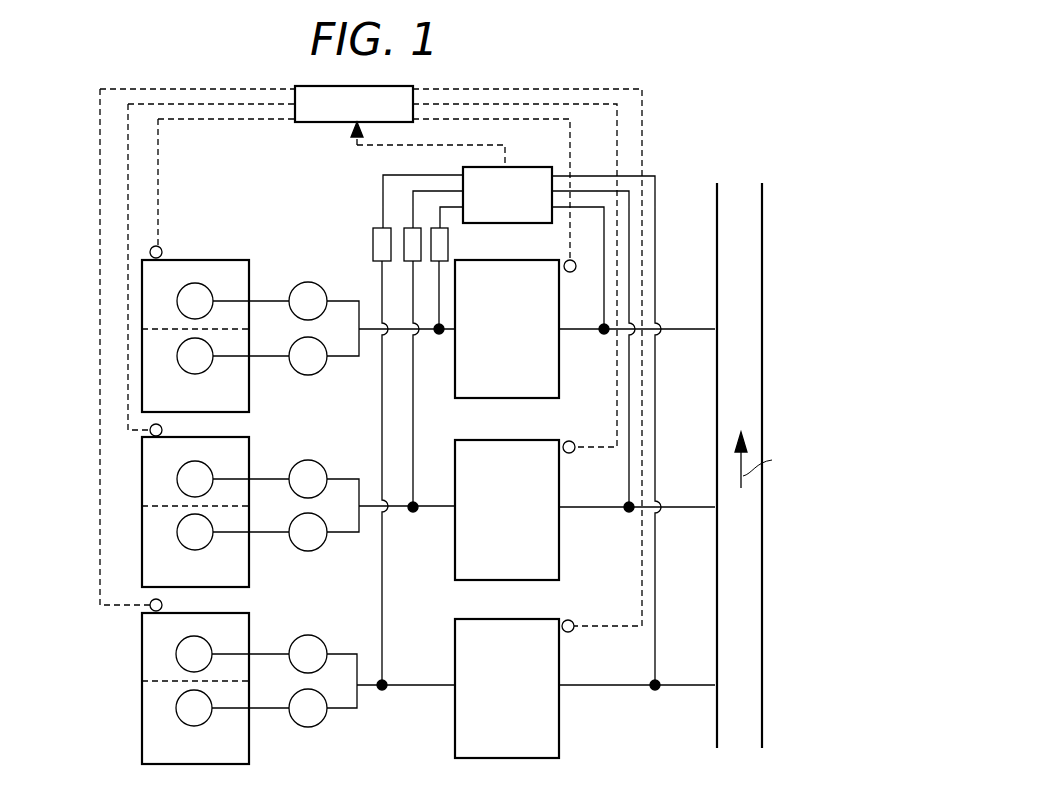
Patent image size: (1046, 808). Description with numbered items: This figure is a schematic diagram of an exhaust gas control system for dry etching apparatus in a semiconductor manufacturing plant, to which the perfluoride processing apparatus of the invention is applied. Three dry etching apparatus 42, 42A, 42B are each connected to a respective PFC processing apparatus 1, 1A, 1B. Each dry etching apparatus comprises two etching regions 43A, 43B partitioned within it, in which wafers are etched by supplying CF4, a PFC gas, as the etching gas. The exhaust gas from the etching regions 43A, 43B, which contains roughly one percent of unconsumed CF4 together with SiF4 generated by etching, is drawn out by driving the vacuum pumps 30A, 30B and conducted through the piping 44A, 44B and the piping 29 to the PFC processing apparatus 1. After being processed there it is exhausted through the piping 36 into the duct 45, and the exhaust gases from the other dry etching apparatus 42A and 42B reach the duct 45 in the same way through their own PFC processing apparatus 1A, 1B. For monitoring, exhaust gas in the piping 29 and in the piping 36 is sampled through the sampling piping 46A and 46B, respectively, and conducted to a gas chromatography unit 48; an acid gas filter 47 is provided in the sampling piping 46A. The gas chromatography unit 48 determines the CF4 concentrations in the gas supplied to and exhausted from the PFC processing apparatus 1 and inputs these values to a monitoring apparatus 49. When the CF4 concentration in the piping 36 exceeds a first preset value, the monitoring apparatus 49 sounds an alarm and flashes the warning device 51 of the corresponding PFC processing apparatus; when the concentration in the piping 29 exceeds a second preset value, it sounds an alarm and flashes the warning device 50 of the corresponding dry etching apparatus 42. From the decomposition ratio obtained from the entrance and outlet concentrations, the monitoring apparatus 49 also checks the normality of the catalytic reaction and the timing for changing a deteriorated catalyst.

The PFC processing apparatus 1 is at (507, 329).
The PFC processing apparatus 1A is at (507, 510).
The PFC processing apparatus 1B is at (507, 688).
The piping 29 is at (431, 334).
The vacuum pump 30A is at (312, 283).
The vacuum pump 30B is at (318, 375).
The piping 36 is at (670, 333).
The dry etching apparatus 42 is at (205, 258).
The dry etching apparatus 42A is at (142, 478).
The dry etching apparatus 42B is at (140, 723).
The etching region 43A is at (145, 278).
The etching region 43B is at (145, 370).
The piping 44A is at (265, 297).
The piping 44B is at (272, 360).
The duct 45 is at (762, 380).
The sampling piping 46A is at (440, 215).
The sampling piping 46B is at (604, 285).
The acid gas filter 47 is at (431, 256).
The gas chromatography unit 48 is at (508, 225).
The monitoring apparatus 49 is at (406, 98).
The warning device 50 is at (161, 246).
The warning device 51 is at (571, 272).